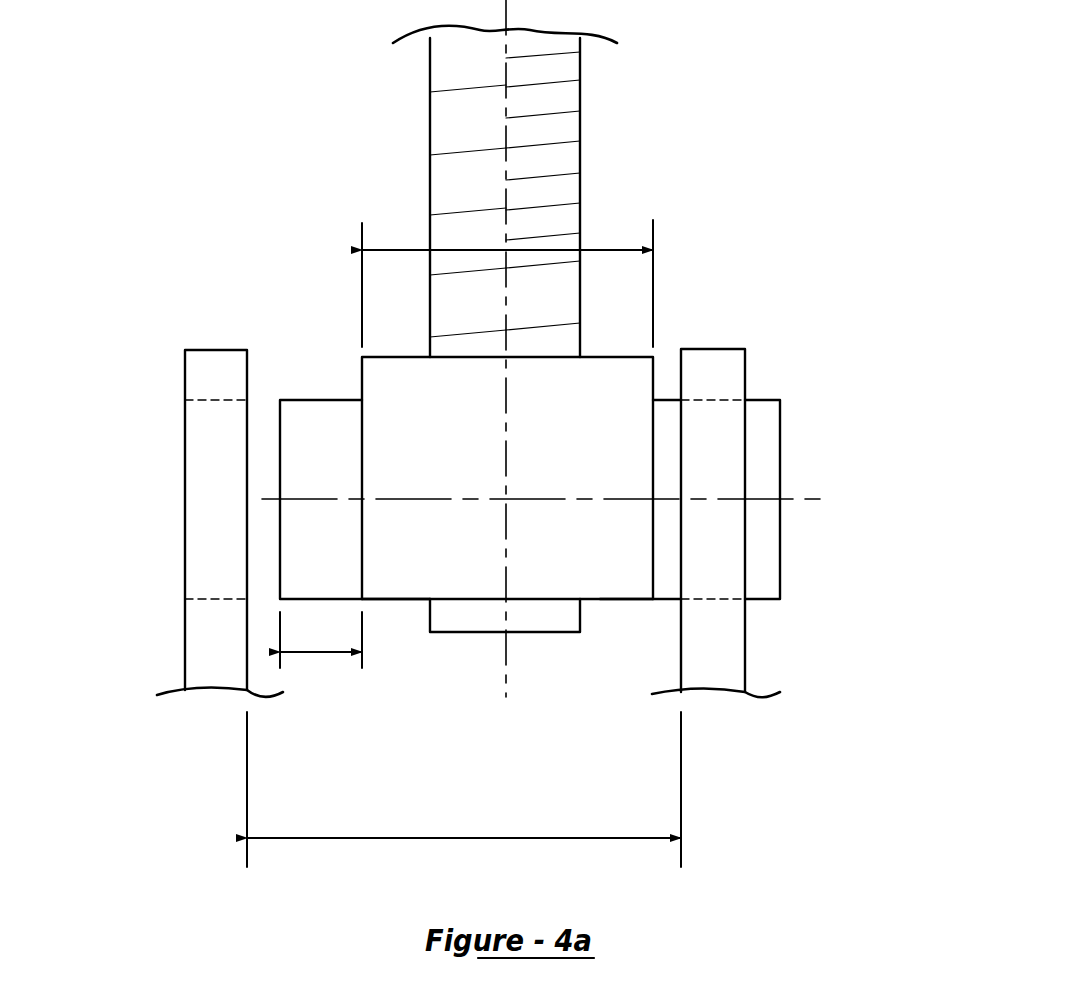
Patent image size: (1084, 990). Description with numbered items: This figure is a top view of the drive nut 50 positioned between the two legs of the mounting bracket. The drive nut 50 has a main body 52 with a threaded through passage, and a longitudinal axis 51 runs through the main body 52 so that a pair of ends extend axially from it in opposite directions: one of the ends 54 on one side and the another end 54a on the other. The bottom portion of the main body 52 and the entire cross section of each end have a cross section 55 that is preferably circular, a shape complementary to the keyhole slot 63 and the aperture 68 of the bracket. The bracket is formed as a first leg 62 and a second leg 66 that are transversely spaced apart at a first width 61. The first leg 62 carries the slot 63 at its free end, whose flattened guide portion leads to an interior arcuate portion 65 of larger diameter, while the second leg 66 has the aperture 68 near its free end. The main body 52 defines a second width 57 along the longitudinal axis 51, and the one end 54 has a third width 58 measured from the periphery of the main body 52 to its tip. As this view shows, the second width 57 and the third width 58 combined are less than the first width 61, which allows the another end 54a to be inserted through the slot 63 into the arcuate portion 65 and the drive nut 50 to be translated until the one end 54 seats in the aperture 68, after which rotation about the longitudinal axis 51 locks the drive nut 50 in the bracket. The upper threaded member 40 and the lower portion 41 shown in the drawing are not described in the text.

The threaded shaft 40 is at (645, 144).
The lower shaft end 41 is at (507, 663).
The drive nut 50 is at (684, 300).
The longitudinal axis 51 is at (800, 499).
The main body 52 is at (618, 599).
The end 54 is at (318, 400).
The another end 54a is at (762, 599).
The cross section 55 is at (402, 599).
The second width 57 is at (410, 250).
The third width 58 is at (322, 655).
The first width 61 is at (465, 838).
The first leg 62 is at (745, 372).
The slot 63 is at (712, 400).
The interior arcuate portion 65 is at (712, 599).
The second leg 66 is at (183, 350).
The aperture 68 is at (215, 599).